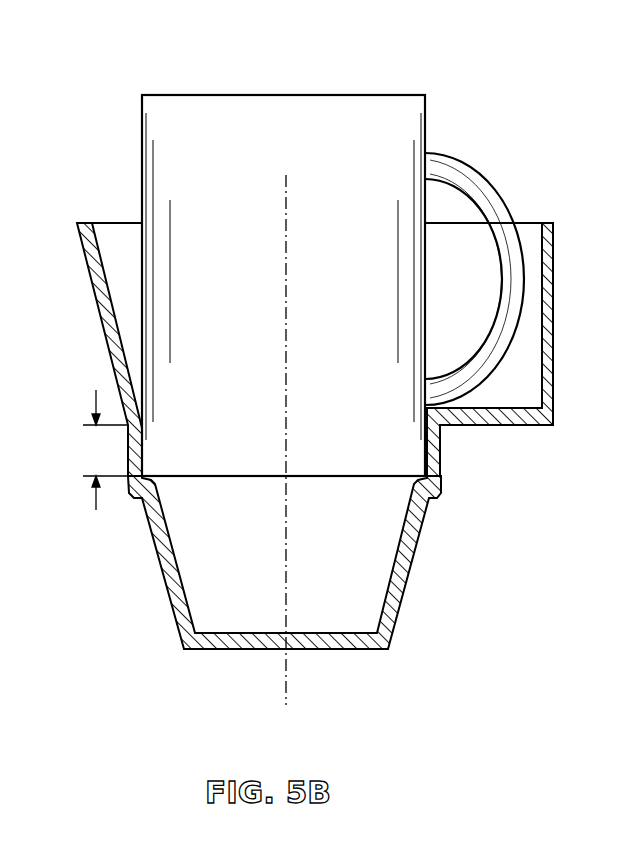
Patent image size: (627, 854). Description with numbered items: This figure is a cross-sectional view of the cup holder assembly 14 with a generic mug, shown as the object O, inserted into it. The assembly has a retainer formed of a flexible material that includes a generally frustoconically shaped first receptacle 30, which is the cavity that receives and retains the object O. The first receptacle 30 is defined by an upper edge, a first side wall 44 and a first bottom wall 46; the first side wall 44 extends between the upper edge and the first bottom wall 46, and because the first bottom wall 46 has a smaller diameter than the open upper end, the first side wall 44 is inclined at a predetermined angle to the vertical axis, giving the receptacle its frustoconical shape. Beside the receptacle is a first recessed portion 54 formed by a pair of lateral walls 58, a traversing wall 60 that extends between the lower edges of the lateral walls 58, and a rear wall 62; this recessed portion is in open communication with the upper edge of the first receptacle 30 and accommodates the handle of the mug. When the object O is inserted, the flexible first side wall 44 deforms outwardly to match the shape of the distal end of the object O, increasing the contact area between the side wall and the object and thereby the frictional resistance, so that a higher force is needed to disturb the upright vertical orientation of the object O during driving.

The cup holder assembly 14 is at (97, 123).
The object O is at (343, 95).
The first receptacle 30 is at (129, 306).
The first recessed portion 54 is at (528, 210).
The rear wall 62 is at (556, 246).
The lateral walls 58 is at (520, 390).
The traversing wall 60 is at (488, 424).
The first side wall 44 is at (172, 577).
The first bottom wall 46 is at (221, 650).